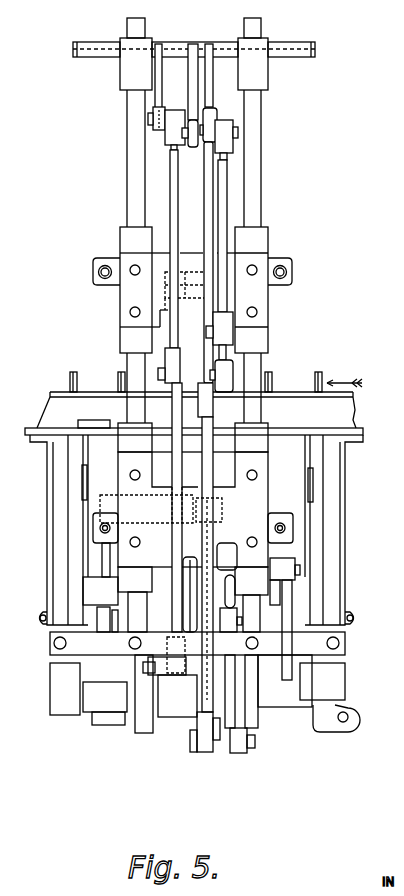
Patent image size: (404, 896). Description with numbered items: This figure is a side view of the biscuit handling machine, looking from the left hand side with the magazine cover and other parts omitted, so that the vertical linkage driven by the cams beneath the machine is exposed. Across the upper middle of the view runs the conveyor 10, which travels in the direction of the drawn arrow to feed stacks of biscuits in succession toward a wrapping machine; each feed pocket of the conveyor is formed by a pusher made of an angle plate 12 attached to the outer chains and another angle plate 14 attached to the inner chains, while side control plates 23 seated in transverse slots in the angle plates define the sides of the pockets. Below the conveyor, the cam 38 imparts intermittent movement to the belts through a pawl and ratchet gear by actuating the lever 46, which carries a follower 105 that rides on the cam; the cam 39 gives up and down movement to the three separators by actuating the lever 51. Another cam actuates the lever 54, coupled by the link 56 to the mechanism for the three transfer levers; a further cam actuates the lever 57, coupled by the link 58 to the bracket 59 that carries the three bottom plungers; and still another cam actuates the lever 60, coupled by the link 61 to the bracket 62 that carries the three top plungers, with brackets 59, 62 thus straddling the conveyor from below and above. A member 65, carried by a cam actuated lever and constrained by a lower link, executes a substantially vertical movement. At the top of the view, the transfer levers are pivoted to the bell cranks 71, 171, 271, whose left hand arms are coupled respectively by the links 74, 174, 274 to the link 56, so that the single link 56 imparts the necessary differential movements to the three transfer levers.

The conveyor 10 is at (316, 380).
The angle plate 12 is at (119, 373).
The angle plate 14 is at (76, 373).
The side control plates 23 is at (287, 392).
The cam 38 is at (290, 680).
The cam 39 is at (258, 728).
The lever 46 is at (276, 565).
The lever 51 is at (190, 566).
The lever 54 is at (245, 753).
The link 56 is at (210, 467).
The lever 57 is at (231, 592).
The link 58 is at (215, 567).
The bracket 59 is at (262, 484).
The lever 60 is at (145, 667).
The link 61 is at (172, 408).
The bracket 62 is at (265, 306).
The member 65 is at (143, 495).
The bell crank 71 is at (213, 99).
The link 74 is at (226, 180).
The follower 105 is at (290, 563).
The bell crank 171 is at (193, 88).
The link 174 is at (204, 162).
The bell crank 271 is at (160, 101).
The link 274 is at (171, 162).